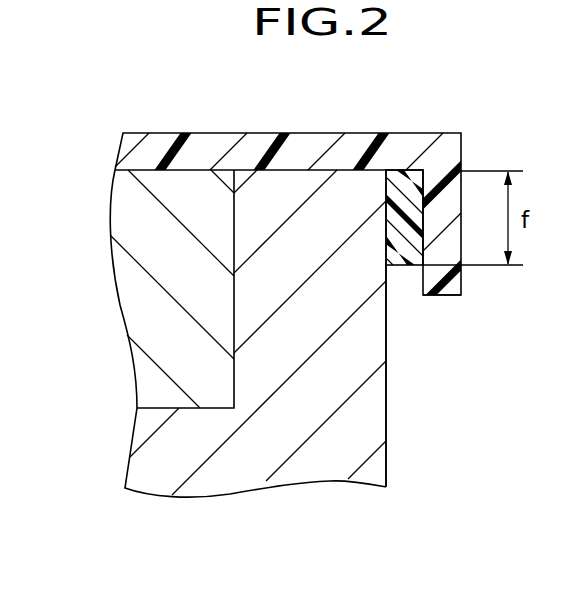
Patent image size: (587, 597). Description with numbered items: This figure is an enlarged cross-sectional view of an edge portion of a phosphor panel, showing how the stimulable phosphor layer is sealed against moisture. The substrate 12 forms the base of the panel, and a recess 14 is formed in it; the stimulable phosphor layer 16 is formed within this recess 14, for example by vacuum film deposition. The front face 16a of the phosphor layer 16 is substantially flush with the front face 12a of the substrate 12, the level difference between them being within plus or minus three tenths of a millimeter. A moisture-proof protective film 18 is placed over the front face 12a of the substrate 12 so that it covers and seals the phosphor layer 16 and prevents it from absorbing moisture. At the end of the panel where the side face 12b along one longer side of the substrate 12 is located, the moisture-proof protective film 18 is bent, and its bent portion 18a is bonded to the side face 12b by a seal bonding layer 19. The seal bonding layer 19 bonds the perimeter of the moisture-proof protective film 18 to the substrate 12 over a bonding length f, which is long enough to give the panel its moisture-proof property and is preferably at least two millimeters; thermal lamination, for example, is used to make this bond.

The substrate 12 is at (203, 482).
The front face of the substrate 12a is at (306, 169).
The side face of the substrate 12b is at (386, 438).
The recess 14 is at (234, 367).
The stimulable phosphor layer 16 is at (137, 229).
The front face of the phosphor layer 16a is at (152, 168).
The moisture-proof protective film 18 is at (254, 150).
The bent portion 18a is at (443, 296).
The seal bonding layer 19 is at (404, 268).